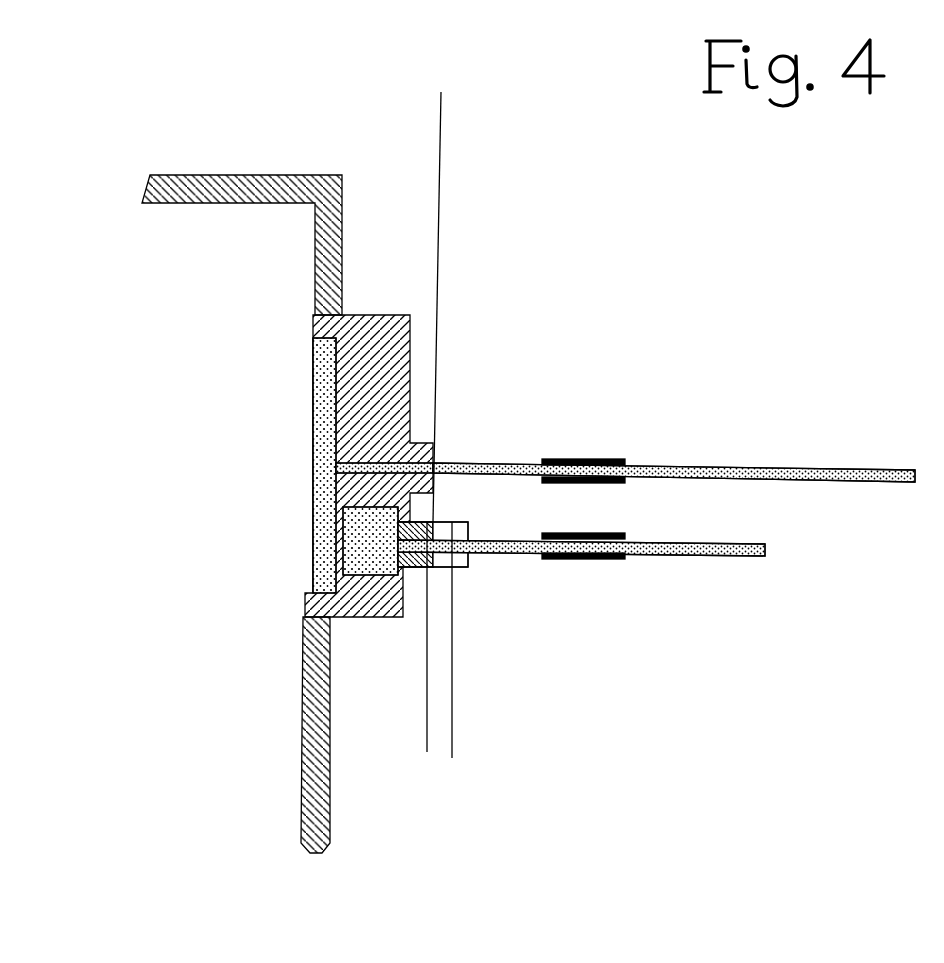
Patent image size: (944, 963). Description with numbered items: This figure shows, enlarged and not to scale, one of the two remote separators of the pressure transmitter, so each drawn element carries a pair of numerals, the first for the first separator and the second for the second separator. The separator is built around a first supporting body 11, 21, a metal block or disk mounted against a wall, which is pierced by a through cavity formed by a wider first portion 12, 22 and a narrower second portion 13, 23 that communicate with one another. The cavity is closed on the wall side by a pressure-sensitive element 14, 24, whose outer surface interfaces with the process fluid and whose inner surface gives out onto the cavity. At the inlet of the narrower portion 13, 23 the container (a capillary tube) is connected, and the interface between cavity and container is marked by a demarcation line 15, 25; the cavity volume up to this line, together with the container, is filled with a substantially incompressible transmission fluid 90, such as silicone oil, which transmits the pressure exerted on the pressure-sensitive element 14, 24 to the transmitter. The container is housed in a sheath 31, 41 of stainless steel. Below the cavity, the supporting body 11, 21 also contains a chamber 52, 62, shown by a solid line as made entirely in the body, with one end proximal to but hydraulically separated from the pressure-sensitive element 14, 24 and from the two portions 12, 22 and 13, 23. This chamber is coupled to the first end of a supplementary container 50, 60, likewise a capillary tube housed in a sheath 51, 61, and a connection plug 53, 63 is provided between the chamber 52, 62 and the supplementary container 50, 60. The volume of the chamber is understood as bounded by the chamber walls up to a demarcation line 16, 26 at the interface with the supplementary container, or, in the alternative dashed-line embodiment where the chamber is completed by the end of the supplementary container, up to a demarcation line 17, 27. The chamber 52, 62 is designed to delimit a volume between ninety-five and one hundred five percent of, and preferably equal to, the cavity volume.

The first supporting body 11 is at (454, 378).
The second supporting body 21 is at (368, 311).
The first portion of first cavity 12 is at (239, 415).
The first portion of second cavity 22 is at (326, 389).
The second portion of first cavity 13 is at (523, 334).
The second portion of second cavity 23 is at (380, 460).
The third pressure-sensitive element 14 is at (216, 514).
The fourth pressure-sensitive element 24 is at (306, 436).
The demarcation line 15 is at (522, 293).
The demarcation line 25 is at (443, 92).
The demarcation line 16 is at (490, 690).
The demarcation line 26 is at (430, 755).
The demarcation line 17 is at (548, 640).
The demarcation line 27 is at (455, 752).
The sheath 31 is at (599, 419).
The sheath 41 is at (586, 455).
The transmission fluid 90 is at (669, 464).
The first supplementary container 50 is at (581, 599).
The second supplementary container 60 is at (684, 557).
The sheath 51 is at (587, 587).
The sheath 61 is at (584, 560).
The first chamber 52 is at (279, 580).
The second chamber 62 is at (365, 553).
The connection plug 53 is at (314, 673).
The connection plug 63 is at (464, 524).